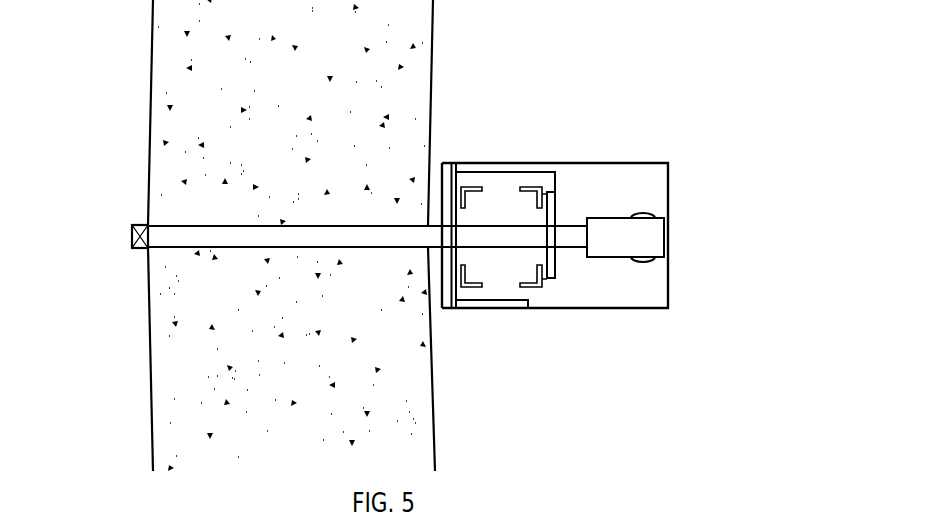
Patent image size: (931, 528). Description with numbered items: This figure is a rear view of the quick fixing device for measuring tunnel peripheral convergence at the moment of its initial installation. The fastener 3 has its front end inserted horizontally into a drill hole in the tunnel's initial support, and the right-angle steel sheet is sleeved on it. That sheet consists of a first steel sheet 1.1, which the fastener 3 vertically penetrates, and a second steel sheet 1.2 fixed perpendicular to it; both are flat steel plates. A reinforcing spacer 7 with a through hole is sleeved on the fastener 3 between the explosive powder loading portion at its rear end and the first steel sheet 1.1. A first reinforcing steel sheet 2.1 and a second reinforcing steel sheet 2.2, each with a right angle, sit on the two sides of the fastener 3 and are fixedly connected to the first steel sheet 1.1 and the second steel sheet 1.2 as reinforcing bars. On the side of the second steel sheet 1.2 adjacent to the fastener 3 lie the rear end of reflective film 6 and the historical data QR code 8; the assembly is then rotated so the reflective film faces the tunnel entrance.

The fastener 3 is at (138, 212).
The first steel sheet 1.1 is at (451, 318).
The second steel sheet 1.2 is at (615, 161).
The first reinforcing steel sheet 2.1 is at (463, 149).
The second reinforcing steel sheet 2.2 is at (520, 318).
The rear end of reflective film 6 is at (683, 210).
The reinforcing spacer 7 is at (560, 187).
The historical data QR code 8 is at (525, 182).